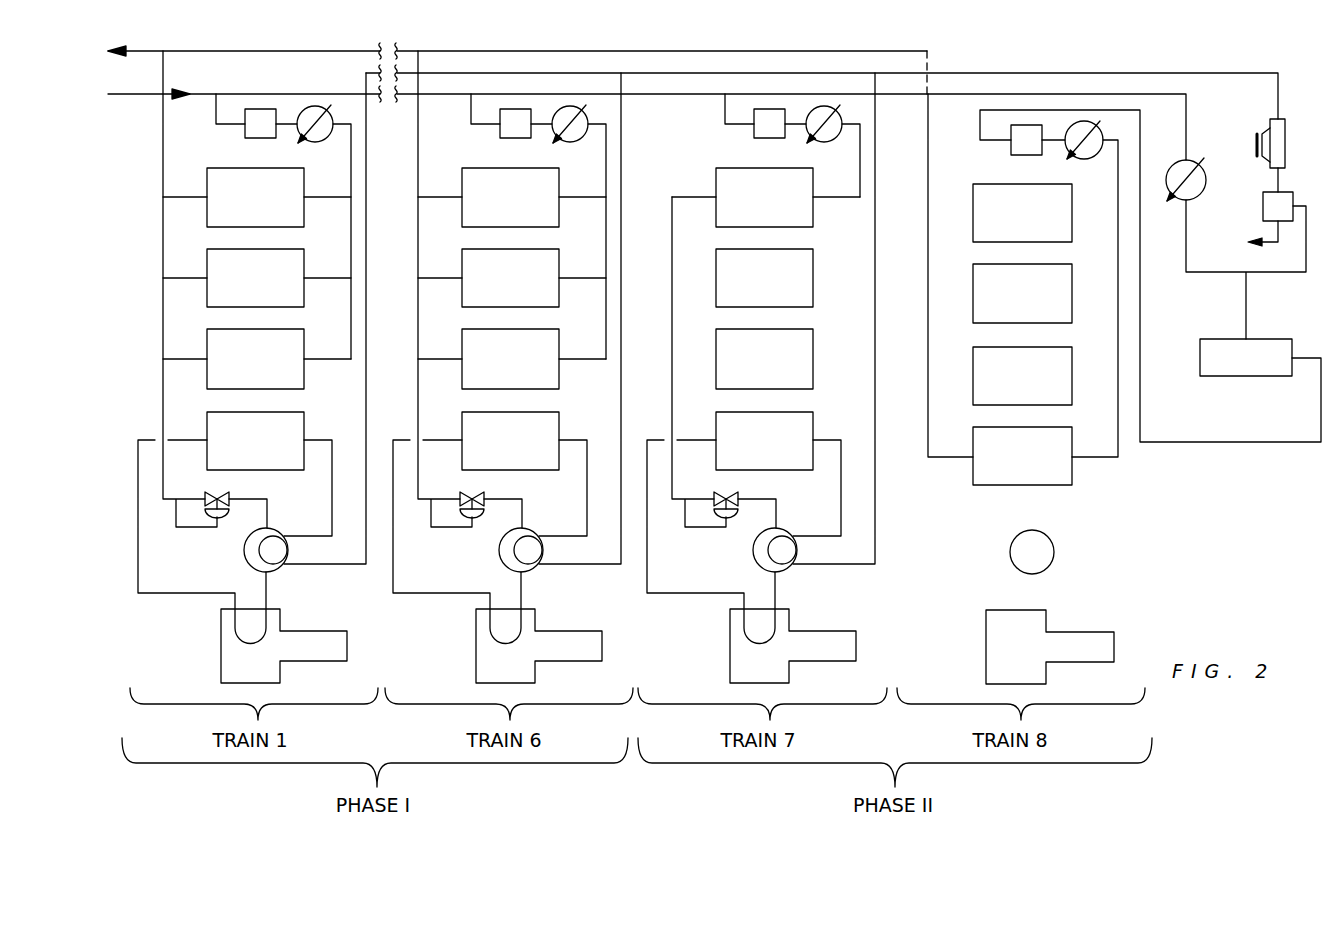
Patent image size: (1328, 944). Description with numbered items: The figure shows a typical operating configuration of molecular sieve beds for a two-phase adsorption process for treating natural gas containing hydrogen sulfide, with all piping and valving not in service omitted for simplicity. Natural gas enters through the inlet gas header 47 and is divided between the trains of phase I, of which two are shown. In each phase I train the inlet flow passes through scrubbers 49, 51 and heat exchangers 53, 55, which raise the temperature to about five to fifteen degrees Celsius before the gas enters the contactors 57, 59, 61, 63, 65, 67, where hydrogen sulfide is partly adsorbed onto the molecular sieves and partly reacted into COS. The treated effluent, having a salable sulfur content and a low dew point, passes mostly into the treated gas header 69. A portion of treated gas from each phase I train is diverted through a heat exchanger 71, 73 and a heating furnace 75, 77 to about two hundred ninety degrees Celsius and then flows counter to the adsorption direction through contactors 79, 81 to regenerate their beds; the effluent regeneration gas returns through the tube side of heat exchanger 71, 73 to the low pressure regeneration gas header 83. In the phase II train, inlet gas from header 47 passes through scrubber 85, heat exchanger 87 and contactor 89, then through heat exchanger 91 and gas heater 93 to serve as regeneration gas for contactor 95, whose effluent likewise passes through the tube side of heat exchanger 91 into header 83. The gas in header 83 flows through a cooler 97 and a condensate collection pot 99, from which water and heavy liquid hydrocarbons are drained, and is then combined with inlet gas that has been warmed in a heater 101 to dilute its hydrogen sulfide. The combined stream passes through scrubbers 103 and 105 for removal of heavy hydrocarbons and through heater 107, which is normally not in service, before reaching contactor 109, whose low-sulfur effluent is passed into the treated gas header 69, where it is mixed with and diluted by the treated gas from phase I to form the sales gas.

The inlet gas header 47 is at (132, 95).
The treated gas header 69 is at (259, 51).
The low pressure regeneration gas header 83 is at (552, 73).
The scrubber 49 is at (245, 138).
The heat exchanger 53 is at (323, 142).
The contactor 57 is at (205, 181).
The contactor 59 is at (205, 264).
The contactor 61 is at (205, 344).
The contactor 79 is at (205, 424).
The heat exchanger 71 is at (243, 550).
The heating furnace 75 is at (316, 631).
The scrubber 51 is at (500, 138).
The heat exchanger 55 is at (578, 142).
The contactor 63 is at (460, 181).
The contactor 65 is at (460, 264).
The contactor 67 is at (460, 344).
The contactor 81 is at (460, 424).
The heat exchanger 73 is at (498, 550).
The heating furnace 77 is at (571, 631).
The scrubber 85 is at (754, 138).
The heat exchanger 87 is at (834, 146).
The contactor 89 is at (712, 175).
The contactor 95 is at (712, 424).
The heat exchanger 91 is at (750, 550).
The gas heater 93 is at (826, 631).
The cooler 97 is at (1285, 140).
The condensate collection pot 99 is at (1261, 208).
The heater 101 is at (1198, 175).
The scrubber 103 is at (1230, 376).
The scrubber 105 is at (1000, 154).
The heater 107 is at (1084, 159).
The contactor 109 is at (978, 485).